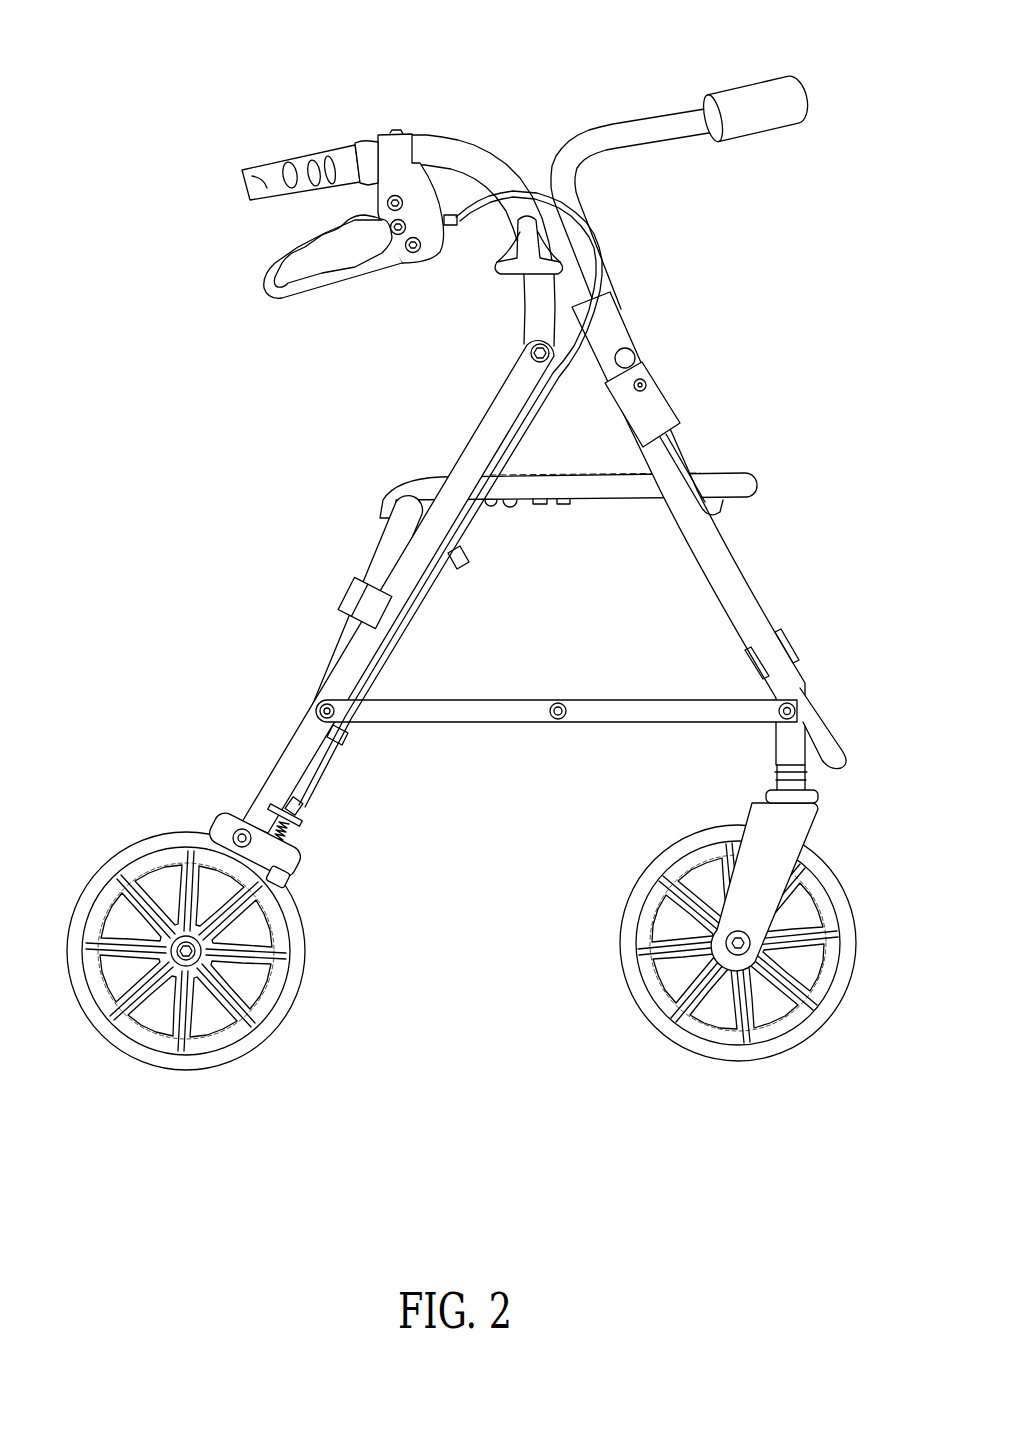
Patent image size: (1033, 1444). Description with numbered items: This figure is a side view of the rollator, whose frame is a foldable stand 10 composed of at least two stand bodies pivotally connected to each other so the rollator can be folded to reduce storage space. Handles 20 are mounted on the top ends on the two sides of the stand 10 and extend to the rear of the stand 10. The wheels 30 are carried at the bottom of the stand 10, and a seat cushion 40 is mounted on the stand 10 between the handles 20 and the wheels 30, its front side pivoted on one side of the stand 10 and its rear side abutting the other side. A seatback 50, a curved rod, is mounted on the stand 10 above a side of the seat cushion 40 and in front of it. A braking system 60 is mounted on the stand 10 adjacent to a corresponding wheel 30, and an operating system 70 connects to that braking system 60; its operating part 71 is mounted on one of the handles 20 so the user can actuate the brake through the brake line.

The stand 10 is at (534, 583).
The handles 20 is at (240, 167).
The wheels 30 is at (305, 1000).
The seat cushion 40 is at (392, 481).
The seatback 50 is at (792, 67).
The braking system 60 is at (310, 852).
The operating system 70 is at (598, 250).
The operating part 71 is at (278, 299).